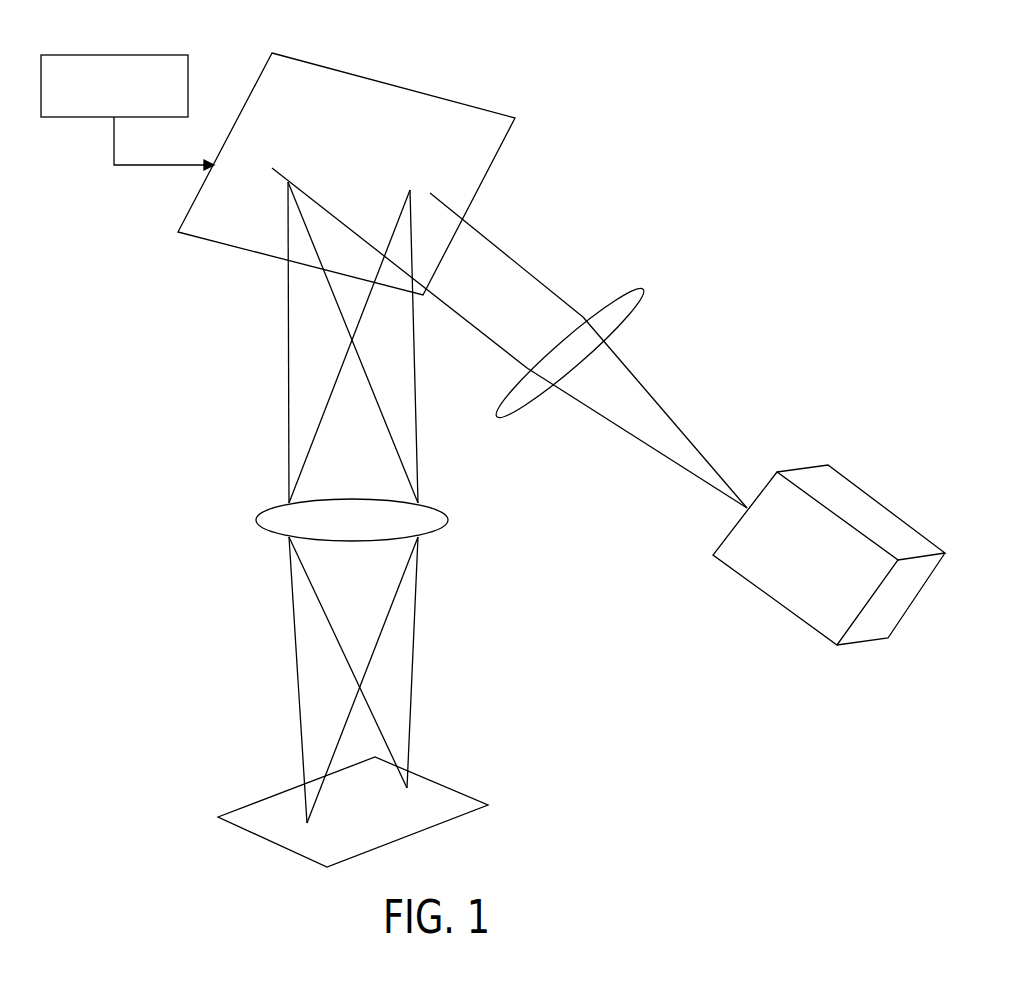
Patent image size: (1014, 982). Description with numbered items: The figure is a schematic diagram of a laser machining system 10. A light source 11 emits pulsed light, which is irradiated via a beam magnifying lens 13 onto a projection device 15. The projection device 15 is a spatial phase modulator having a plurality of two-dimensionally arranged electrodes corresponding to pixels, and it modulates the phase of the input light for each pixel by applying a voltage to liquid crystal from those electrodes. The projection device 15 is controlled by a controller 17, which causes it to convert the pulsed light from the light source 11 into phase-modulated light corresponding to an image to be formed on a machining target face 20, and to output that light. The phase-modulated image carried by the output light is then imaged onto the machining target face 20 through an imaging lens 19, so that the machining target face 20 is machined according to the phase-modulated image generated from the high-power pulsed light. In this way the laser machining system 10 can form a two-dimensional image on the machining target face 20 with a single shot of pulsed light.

The laser machining system 10 is at (812, 145).
The light source 11 is at (858, 492).
The beam magnifying lens 13 is at (641, 292).
The projection device 15 is at (498, 113).
The controller 17 is at (163, 55).
The imaging lens 19 is at (259, 521).
The machining target face 20 is at (488, 805).